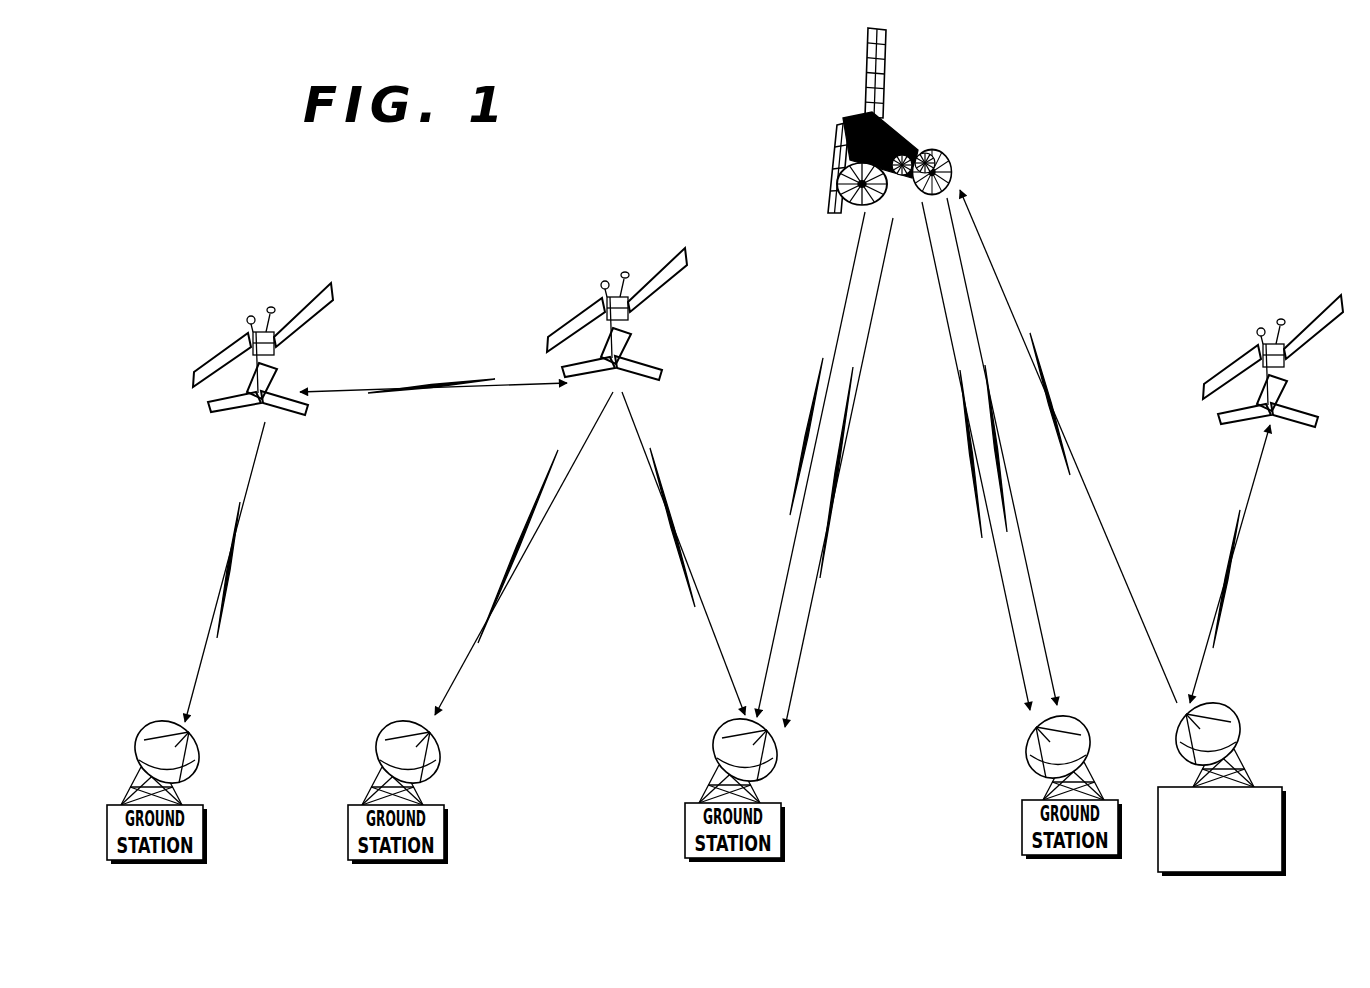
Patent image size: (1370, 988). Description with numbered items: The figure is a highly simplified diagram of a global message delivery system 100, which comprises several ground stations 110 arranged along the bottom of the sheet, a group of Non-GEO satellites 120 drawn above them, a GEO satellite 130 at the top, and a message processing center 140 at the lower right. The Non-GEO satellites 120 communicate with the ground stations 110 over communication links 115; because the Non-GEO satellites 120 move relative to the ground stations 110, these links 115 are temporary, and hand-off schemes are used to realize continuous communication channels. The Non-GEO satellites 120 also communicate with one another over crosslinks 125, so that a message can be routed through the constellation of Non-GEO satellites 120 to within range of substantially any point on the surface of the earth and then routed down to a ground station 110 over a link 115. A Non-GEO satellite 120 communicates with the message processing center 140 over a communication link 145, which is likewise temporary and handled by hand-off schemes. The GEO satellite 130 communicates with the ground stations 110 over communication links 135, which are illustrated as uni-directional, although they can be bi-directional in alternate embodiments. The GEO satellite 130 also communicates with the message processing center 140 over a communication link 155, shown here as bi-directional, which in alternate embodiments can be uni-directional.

The global message delivery system 100 is at (416, 171).
The ground station 110 is at (207, 832).
The communication link 115 is at (232, 556).
The Non-GEO satellite 120 is at (203, 372).
The crosslink 125 is at (443, 392).
The GEO satellite 130 is at (843, 163).
The communication link 135 is at (832, 528).
The message processing center 140 is at (1283, 820).
The communication link 145 is at (1242, 553).
The communication link 155 is at (1068, 424).